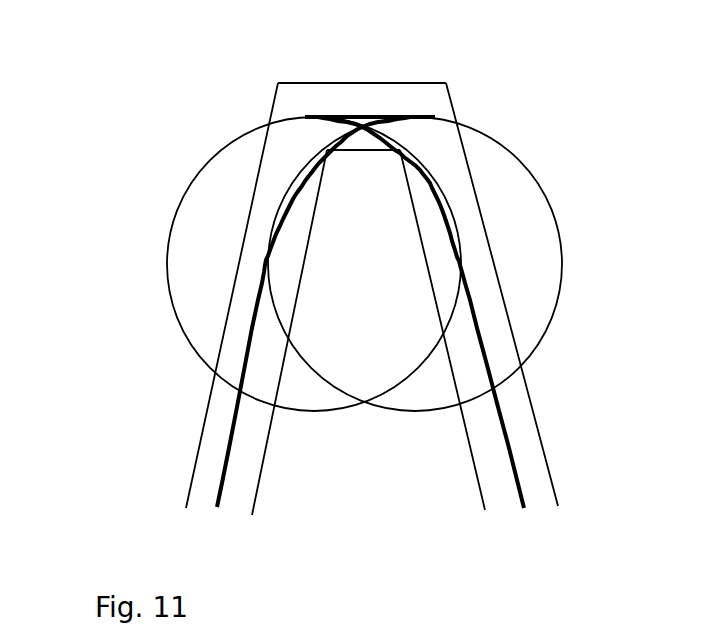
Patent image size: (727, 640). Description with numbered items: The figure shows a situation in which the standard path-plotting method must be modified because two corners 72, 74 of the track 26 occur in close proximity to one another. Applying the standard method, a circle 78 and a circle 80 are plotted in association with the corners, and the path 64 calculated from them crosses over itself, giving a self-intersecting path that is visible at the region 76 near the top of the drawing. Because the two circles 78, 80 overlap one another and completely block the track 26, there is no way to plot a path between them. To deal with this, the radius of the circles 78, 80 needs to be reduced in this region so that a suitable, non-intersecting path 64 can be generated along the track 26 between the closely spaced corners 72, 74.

The region 76 is at (380, 102).
The corner 74 is at (422, 143).
The corner 72 is at (295, 150).
The circle 80 is at (562, 270).
The circle 78 is at (172, 291).
The track 26 is at (518, 393).
The path 64 is at (228, 438).